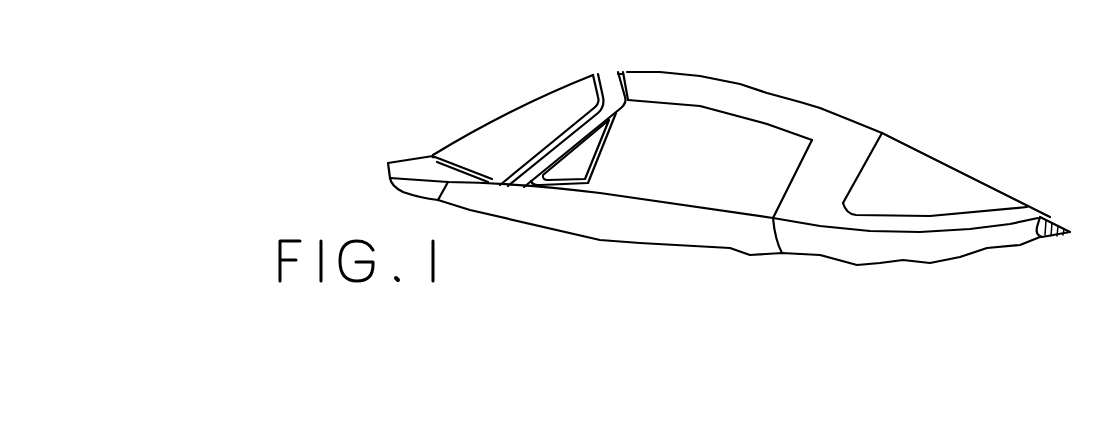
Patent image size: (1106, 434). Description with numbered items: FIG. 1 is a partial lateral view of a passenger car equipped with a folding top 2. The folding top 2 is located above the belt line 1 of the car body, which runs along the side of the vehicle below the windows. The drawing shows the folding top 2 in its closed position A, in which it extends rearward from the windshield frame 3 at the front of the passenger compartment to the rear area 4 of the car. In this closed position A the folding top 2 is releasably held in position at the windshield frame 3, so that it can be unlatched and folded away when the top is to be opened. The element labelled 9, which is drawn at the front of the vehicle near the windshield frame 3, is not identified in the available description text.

The belt line 1 is at (649, 277).
The folding top 2 is at (772, 90).
The windshield frame 3 is at (608, 70).
The rear area 4 is at (1054, 213).
The windshield 9 is at (505, 114).
The closed position A is at (636, 37).